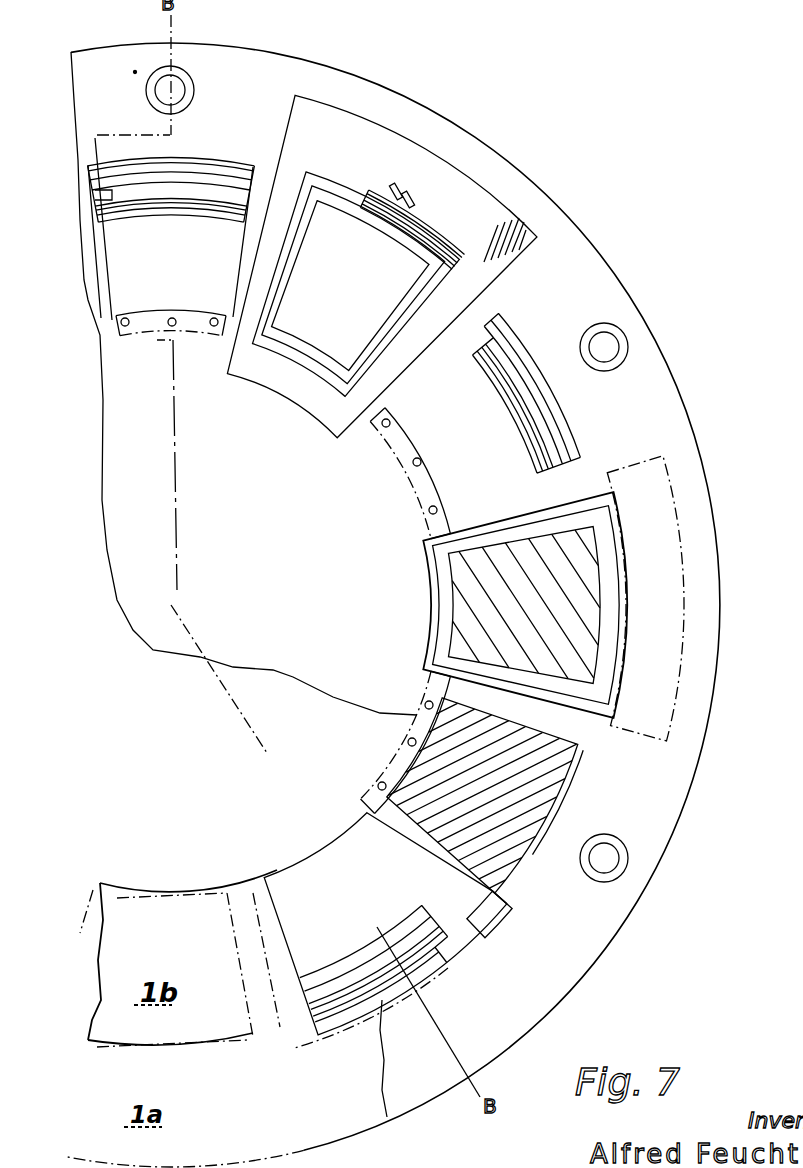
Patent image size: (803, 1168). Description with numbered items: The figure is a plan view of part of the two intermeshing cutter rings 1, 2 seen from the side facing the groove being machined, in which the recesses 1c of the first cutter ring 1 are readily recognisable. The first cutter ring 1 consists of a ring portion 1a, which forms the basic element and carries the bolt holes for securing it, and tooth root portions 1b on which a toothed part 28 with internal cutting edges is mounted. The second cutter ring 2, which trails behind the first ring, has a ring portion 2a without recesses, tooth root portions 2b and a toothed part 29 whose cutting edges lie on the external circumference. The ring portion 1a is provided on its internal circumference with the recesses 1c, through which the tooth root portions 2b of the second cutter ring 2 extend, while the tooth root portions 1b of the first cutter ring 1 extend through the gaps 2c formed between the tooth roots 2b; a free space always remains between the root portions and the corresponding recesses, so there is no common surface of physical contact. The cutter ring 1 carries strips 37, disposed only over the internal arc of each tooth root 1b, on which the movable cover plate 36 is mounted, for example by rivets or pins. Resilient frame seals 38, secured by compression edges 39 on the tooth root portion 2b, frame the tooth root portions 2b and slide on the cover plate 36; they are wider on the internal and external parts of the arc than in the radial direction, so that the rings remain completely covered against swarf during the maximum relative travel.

The cutter ring 1 is at (119, 44).
The ring portion 1a is at (213, 97).
The tooth root portion 1b is at (157, 262).
The recess 1c is at (628, 553).
The cutter ring 2 is at (170, 887).
The ring portion 2a is at (137, 935).
The tooth root portion 2b is at (333, 327).
The gap 2c is at (550, 695).
The toothed part 28 is at (187, 190).
The toothed part 29 is at (343, 215).
The cover plate 36 is at (155, 466).
The strip 37 is at (150, 318).
The frame seal 38 is at (307, 128).
The compression edge 39 is at (303, 188).